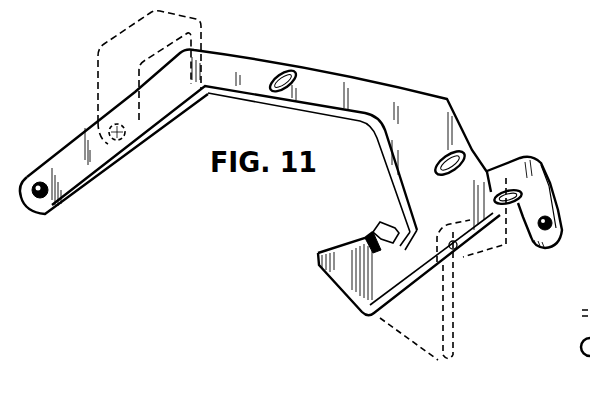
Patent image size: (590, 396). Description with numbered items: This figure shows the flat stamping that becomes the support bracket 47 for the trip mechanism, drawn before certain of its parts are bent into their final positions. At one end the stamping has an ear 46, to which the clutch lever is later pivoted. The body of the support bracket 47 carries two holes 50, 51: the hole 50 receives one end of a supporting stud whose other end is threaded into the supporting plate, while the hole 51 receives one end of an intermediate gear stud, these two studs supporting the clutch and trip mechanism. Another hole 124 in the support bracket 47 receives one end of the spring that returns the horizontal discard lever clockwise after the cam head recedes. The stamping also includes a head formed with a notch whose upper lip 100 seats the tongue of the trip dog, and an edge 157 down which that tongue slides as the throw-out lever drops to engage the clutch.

The ear 46 is at (542, 185).
The support bracket 47 is at (409, 91).
The hole 50 is at (292, 76).
The hole 51 is at (466, 146).
The upper lip 100 is at (374, 236).
The hole 124 is at (433, 276).
The flange 157 is at (333, 248).